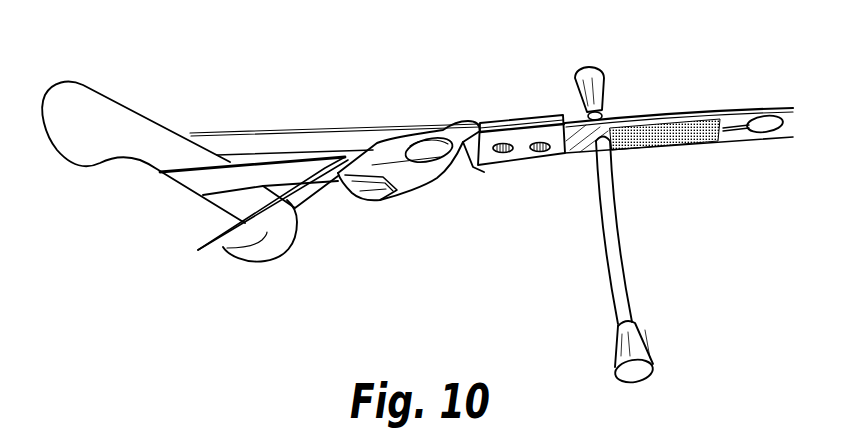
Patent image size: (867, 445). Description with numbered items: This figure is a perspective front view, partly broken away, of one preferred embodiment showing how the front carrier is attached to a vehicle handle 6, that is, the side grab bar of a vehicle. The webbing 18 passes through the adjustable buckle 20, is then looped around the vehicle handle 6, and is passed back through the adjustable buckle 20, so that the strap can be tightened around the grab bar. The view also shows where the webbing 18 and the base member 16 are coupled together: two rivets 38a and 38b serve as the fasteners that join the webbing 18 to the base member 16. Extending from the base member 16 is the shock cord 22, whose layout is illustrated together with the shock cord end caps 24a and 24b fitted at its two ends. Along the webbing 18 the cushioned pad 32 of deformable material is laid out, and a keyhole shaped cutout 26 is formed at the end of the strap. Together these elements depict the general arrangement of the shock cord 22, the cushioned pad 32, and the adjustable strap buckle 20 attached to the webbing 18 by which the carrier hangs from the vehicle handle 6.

The vehicle handle 6 is at (100, 120).
The webbing 18 is at (315, 183).
The base member 16 is at (580, 133).
The buckle 20 is at (438, 175).
The shock cord 22 is at (613, 243).
The shock cord end cap 24a is at (592, 73).
The shock cord end cap 24b is at (653, 363).
The keyhole shaped cutout 26 is at (764, 122).
The cushioned pad 32 is at (687, 138).
The rivet 38a is at (503, 157).
The rivet 38b is at (540, 155).